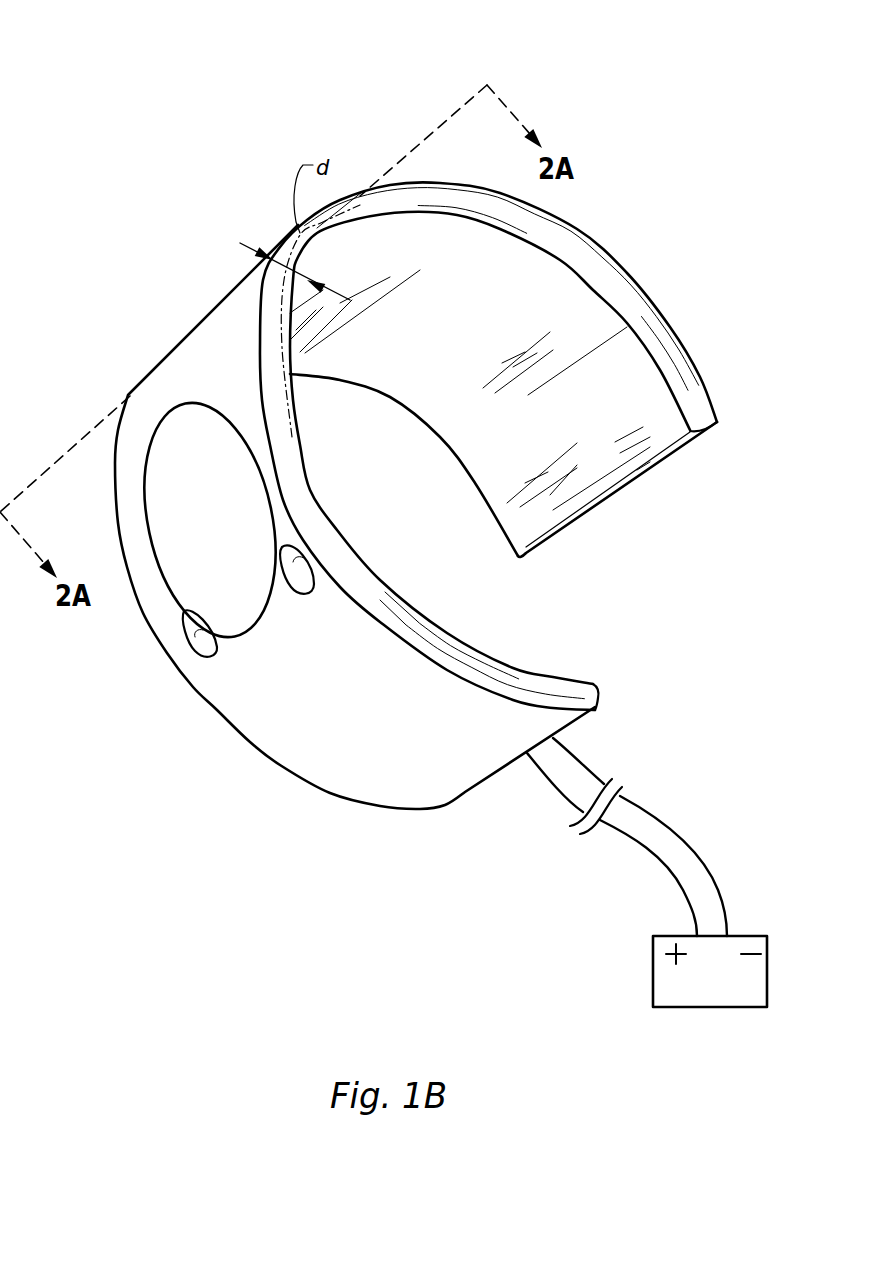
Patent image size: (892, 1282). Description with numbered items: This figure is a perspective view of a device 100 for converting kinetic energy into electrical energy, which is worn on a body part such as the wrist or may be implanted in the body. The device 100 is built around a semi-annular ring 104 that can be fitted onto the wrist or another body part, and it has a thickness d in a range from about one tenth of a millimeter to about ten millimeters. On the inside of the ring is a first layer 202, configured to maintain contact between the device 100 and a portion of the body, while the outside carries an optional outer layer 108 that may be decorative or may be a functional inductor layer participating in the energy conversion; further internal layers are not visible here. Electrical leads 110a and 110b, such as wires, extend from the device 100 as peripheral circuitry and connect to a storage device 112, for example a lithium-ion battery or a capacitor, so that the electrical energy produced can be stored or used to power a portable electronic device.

The device 100 is at (158, 98).
The semi-annular ring 104 is at (608, 284).
The first layer 202 is at (615, 432).
The outer layer 108 is at (260, 703).
The electrical lead 110a is at (557, 790).
The electrical lead 110b is at (578, 766).
The storage device 112 is at (663, 987).